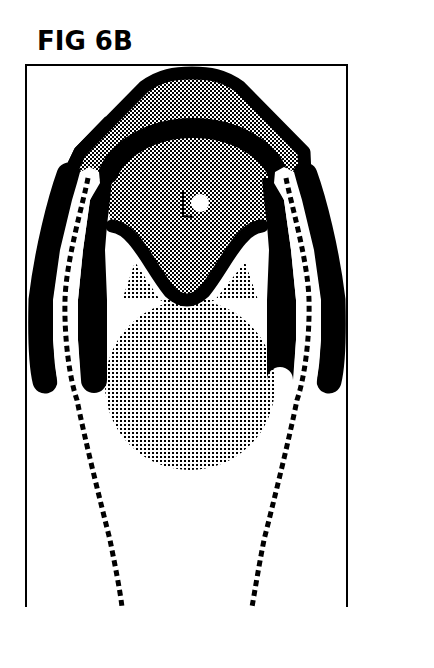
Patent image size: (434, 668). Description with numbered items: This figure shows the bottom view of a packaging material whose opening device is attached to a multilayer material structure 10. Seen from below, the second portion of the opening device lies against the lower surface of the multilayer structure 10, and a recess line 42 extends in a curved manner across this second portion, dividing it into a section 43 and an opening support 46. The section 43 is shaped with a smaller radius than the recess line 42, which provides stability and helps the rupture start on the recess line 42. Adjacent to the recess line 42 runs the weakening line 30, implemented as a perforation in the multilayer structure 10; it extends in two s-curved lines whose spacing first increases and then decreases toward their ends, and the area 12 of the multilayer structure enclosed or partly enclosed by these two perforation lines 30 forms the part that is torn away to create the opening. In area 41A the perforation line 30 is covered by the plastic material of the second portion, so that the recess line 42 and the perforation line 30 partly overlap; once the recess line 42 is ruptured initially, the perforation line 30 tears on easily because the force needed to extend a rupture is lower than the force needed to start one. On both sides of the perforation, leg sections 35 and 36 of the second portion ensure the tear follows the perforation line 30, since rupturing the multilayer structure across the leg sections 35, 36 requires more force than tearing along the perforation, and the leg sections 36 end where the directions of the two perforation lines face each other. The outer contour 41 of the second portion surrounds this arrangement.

The multilayer material structure 10 is at (308, 80).
The area of the multilayer structure 12 is at (198, 601).
The weakening line 30 is at (111, 527).
The leg section 35 is at (271, 390).
The leg section 36 is at (349, 326).
The rim 41 is at (287, 147).
The area 41A is at (78, 147).
The recess line 42 is at (188, 128).
The section 43 is at (157, 88).
The opening support 46 is at (185, 308).